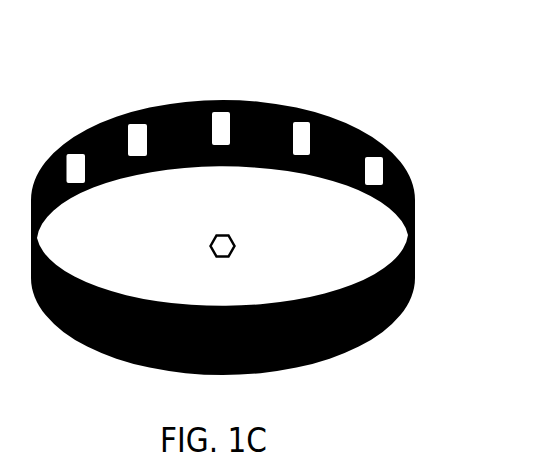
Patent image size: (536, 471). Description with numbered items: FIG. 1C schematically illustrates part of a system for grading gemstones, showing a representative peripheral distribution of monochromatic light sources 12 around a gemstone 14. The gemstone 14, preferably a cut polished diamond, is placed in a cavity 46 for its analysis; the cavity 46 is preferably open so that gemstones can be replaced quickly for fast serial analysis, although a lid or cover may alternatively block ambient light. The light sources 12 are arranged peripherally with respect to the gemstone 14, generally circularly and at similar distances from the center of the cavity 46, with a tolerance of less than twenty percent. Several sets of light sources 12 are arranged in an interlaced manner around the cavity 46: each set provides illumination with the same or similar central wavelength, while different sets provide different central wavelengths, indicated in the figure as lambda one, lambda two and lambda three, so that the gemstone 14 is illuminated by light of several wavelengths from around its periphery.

The monochromatic light sources 12 is at (371, 173).
The gemstone 14 is at (208, 247).
The cavity 46 is at (77, 338).